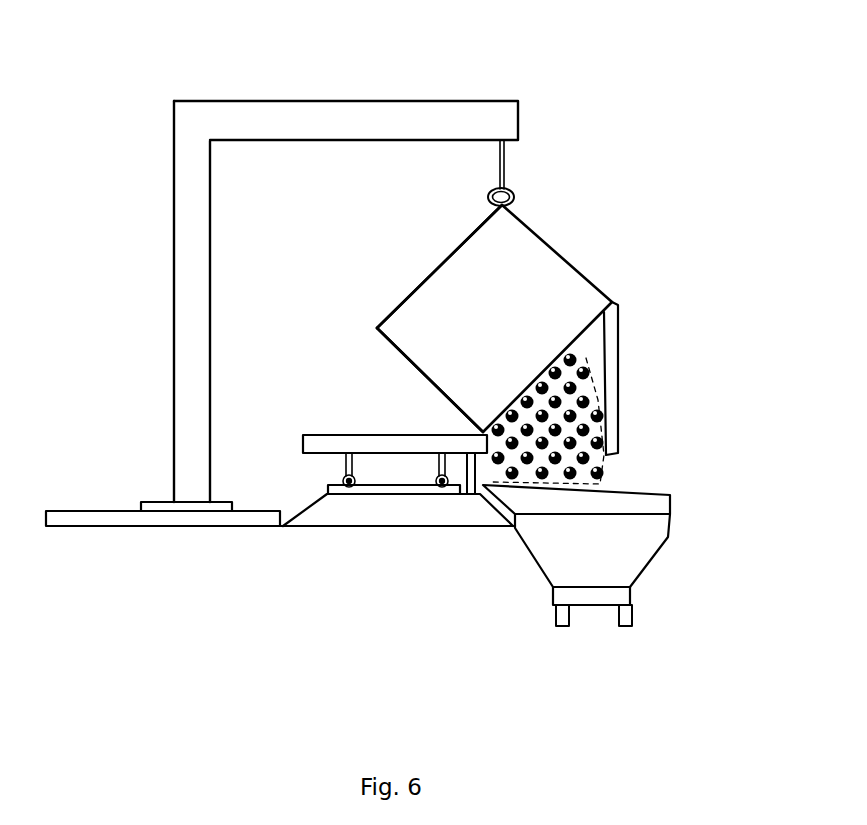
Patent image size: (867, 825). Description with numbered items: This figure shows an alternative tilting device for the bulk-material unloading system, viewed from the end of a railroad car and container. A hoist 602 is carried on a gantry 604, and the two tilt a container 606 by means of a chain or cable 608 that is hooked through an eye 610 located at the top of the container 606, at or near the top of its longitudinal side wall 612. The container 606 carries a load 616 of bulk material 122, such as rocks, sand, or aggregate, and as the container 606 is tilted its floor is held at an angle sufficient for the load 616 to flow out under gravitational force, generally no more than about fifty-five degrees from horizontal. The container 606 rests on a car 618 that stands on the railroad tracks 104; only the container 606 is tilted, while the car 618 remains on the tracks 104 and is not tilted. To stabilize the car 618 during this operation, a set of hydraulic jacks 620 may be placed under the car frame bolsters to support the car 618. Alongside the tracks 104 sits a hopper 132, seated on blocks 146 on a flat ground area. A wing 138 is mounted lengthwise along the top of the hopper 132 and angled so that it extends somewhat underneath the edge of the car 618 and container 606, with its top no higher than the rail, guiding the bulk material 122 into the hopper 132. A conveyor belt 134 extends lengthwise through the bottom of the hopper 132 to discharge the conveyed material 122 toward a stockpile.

The hoist 602 is at (187, 246).
The gantry 604 is at (260, 120).
The chain or cable 608 is at (507, 170).
The eye 610 is at (514, 197).
The longitudinal side wall 612 is at (467, 242).
The container 606 is at (542, 292).
The load 616 is at (398, 351).
The bulk material 122 is at (567, 435).
The car 618 is at (400, 443).
The railroad tracks 104 is at (437, 486).
The hydraulic jacks 620 is at (482, 497).
The wing 138 is at (632, 505).
The hopper 132 is at (643, 542).
The conveyor belt 134 is at (622, 596).
The blocks 146 is at (625, 623).